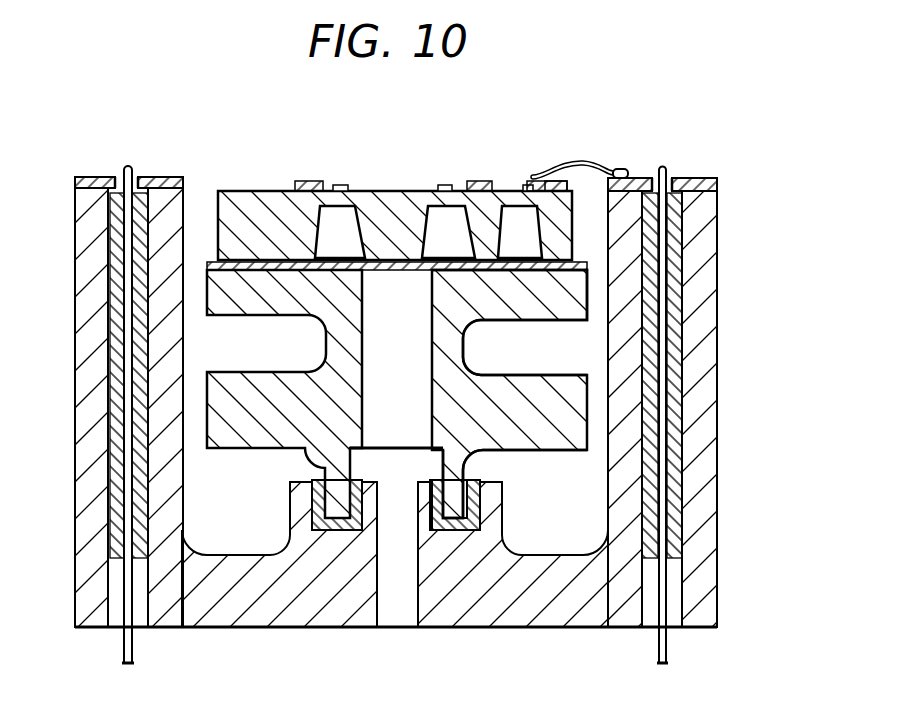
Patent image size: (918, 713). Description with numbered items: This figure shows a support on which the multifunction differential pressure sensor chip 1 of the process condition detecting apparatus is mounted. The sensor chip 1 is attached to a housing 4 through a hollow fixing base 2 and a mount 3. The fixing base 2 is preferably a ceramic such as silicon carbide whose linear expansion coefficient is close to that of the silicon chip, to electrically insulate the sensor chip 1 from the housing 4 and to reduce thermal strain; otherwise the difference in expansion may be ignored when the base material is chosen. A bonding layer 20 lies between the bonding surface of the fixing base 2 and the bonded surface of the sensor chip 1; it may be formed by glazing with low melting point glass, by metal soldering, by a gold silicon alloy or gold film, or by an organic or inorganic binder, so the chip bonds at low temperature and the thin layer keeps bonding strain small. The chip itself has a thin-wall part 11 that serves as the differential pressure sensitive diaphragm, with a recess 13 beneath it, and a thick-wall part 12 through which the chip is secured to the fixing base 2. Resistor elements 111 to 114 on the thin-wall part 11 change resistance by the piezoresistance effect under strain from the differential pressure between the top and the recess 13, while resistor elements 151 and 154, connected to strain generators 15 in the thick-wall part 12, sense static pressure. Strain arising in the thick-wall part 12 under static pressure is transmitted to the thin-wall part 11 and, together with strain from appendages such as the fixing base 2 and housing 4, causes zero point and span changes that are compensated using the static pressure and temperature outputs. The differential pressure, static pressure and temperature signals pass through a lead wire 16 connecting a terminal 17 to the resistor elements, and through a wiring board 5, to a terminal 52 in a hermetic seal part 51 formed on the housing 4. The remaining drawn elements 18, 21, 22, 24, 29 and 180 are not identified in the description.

The multifunction differential pressure sensor chip 1 is at (472, 180).
The hollow fixing base 2 is at (242, 450).
The mount 3 is at (457, 530).
The housing 4 is at (182, 620).
The wiring board 5 is at (88, 177).
The thin-wall part 11 is at (422, 208).
The thick-wall part 12 is at (248, 204).
The recess 13 is at (450, 227).
The strain generator 15 is at (566, 145).
The lead wire 16 is at (610, 170).
The terminal 17 is at (627, 171).
The insulating plate 18 is at (283, 190).
The bonding layer 20 is at (580, 267).
The upper arm 21 is at (573, 320).
The recess 22 is at (452, 357).
The lead pin 24 is at (463, 471).
The fillet 29 is at (472, 458).
The hermetic seal part 51 is at (103, 322).
The terminal 52 is at (120, 450).
The resistor element 111 is at (414, 153).
The resistor element 114 is at (333, 186).
The resistor element 151 is at (579, 145).
The resistor element 154 is at (533, 179).
The cavity 180 is at (520, 233).